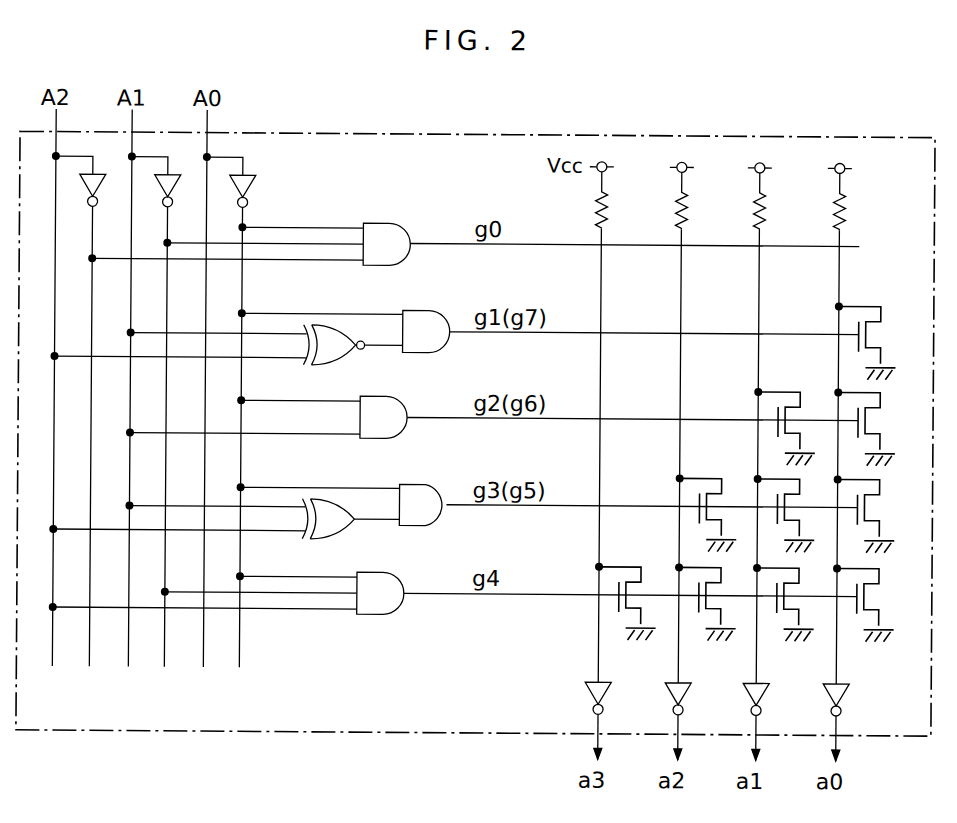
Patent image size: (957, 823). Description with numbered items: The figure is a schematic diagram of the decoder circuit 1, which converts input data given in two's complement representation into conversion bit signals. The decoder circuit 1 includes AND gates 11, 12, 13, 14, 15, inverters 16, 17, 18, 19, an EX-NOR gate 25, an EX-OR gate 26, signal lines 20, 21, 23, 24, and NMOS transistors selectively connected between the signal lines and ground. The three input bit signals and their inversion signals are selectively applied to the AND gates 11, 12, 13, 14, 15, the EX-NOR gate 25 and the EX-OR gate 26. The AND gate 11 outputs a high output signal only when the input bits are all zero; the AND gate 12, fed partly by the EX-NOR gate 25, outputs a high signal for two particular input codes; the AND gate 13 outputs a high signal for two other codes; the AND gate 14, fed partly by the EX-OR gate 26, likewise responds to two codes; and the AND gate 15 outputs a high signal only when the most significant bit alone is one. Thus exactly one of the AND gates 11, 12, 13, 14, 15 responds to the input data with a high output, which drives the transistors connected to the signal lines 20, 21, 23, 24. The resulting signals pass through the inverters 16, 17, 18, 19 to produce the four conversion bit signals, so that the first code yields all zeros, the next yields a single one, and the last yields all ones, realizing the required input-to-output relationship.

The decoder circuit 1 is at (858, 134).
The AND gate 11 is at (391, 233).
The AND gate 12 is at (430, 322).
The AND gate 13 is at (393, 405).
The AND gate 14 is at (428, 493).
The AND gate 15 is at (392, 583).
The inverter 16 is at (602, 690).
The inverter 17 is at (682, 690).
The inverter 18 is at (760, 690).
The inverter 19 is at (840, 690).
The signal line 20 is at (843, 188).
The signal line 21 is at (763, 188).
The signal line 23 is at (685, 188).
The signal line 24 is at (605, 188).
The EX-NOR gate 25 is at (342, 359).
The EX-OR gate 26 is at (340, 532).